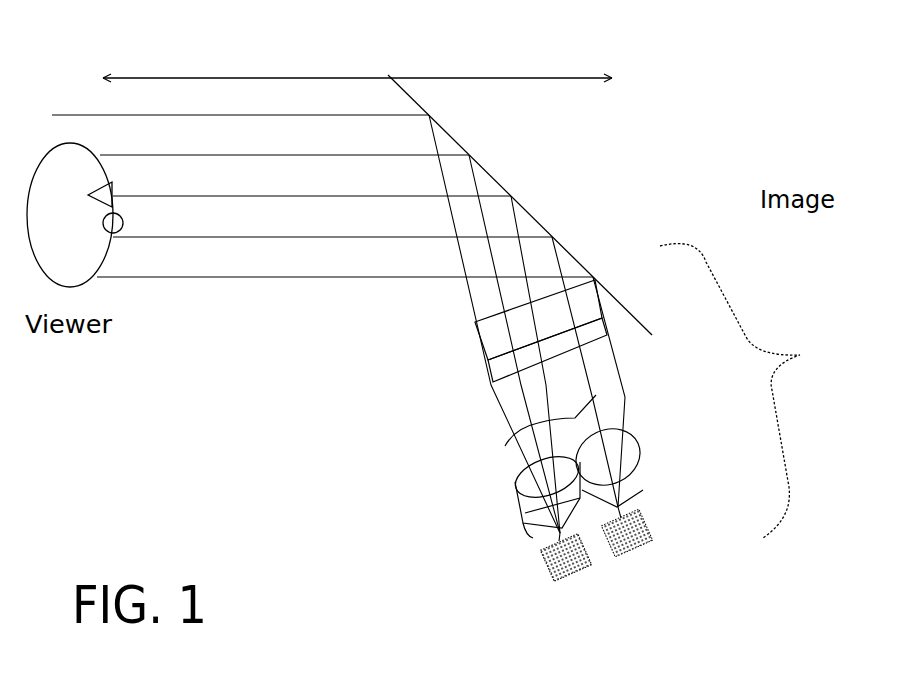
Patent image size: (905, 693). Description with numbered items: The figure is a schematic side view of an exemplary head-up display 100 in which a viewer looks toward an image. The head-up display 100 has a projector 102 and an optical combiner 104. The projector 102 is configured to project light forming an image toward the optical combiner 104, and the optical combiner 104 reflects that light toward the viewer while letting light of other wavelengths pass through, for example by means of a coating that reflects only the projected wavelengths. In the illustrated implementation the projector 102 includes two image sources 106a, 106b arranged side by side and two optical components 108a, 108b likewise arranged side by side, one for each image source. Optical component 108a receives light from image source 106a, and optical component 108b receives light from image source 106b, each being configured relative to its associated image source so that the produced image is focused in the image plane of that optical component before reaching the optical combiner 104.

The head-up display 100 is at (682, 110).
The projector 102 is at (800, 355).
The optical combiner 104 is at (485, 167).
The image source 106a is at (570, 578).
The image source 106b is at (633, 550).
The optical component 108a is at (450, 322).
The optical component 108b is at (603, 263).